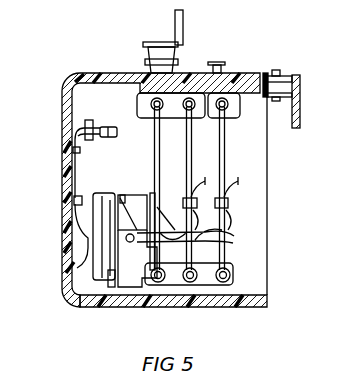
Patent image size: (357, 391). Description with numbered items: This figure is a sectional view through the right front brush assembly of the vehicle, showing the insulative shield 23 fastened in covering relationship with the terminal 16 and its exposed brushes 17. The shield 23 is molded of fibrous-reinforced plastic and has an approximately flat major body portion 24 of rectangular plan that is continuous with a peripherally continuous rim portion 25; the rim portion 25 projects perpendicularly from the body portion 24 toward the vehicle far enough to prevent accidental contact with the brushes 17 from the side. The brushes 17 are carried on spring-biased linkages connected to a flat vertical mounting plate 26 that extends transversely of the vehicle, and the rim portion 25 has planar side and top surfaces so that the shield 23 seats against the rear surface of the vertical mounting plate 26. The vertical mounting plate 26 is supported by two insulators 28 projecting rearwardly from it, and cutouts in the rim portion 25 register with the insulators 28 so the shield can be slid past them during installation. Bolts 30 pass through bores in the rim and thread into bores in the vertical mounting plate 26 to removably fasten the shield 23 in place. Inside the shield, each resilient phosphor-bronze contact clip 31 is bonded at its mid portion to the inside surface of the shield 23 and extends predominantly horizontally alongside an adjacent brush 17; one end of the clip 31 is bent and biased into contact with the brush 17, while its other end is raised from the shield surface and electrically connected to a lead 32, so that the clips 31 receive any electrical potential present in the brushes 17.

The terminal 16 is at (236, 237).
The brush 17 is at (102, 288).
The insulative shield 23 is at (245, 306).
The major body portion 24 is at (68, 277).
The rim portion 25 is at (268, 300).
The vertical mounting plate 26 is at (250, 93).
The insulator 28 is at (147, 56).
The bolt 30 is at (216, 62).
The contact clip 31 is at (80, 228).
The lead 32 is at (115, 123).